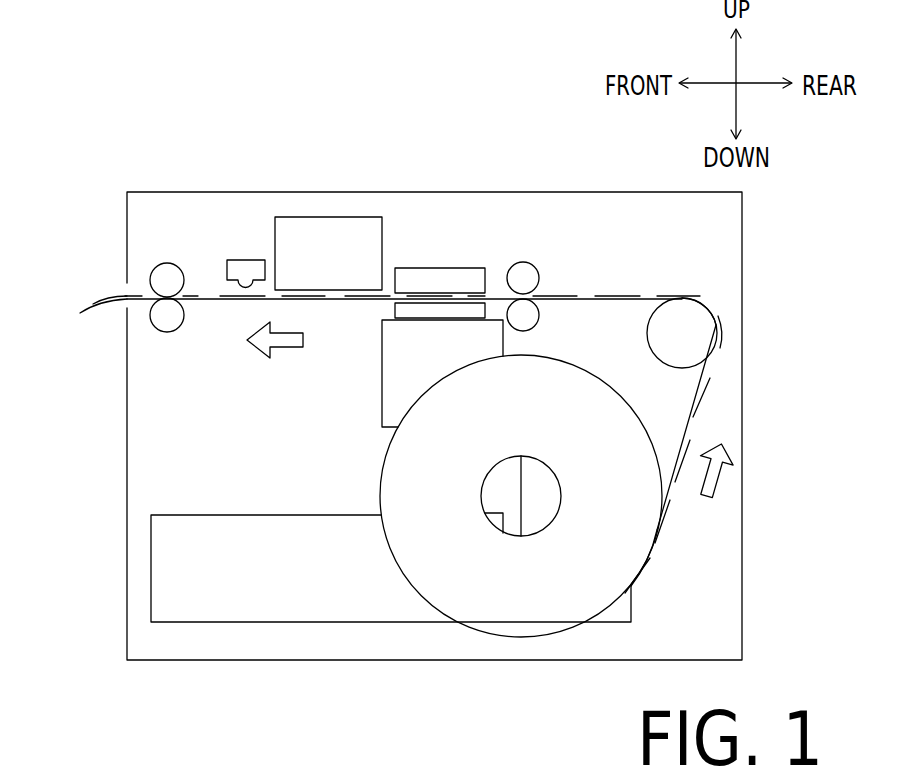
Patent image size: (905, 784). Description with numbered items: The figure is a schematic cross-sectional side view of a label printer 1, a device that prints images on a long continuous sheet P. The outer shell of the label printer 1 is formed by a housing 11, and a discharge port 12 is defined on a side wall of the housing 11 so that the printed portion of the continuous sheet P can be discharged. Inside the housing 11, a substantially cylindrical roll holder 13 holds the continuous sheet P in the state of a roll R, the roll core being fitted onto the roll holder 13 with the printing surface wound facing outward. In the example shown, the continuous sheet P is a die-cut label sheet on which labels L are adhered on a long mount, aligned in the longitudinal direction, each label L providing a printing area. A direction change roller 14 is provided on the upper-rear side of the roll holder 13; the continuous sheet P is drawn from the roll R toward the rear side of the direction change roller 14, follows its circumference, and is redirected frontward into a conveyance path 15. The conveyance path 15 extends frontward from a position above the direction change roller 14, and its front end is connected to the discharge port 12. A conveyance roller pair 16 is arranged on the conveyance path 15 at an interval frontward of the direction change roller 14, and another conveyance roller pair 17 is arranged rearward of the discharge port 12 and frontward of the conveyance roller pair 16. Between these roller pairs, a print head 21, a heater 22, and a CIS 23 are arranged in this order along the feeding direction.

The label printer 1 is at (380, 123).
The housing 11 is at (743, 617).
The discharge port 12 is at (122, 289).
The roll holder 13 is at (532, 537).
The direction change roller 14 is at (705, 313).
The conveyance path 15 is at (225, 305).
The conveyance roller pair 16 is at (538, 317).
The conveyance roller pair 17 is at (178, 317).
The print head 21 is at (443, 277).
The heater 22 is at (330, 217).
The CIS (Contact Image Sensor) 23 is at (245, 260).
The roll R is at (398, 568).
The label L is at (618, 293).
The continuous sheet P is at (652, 295).